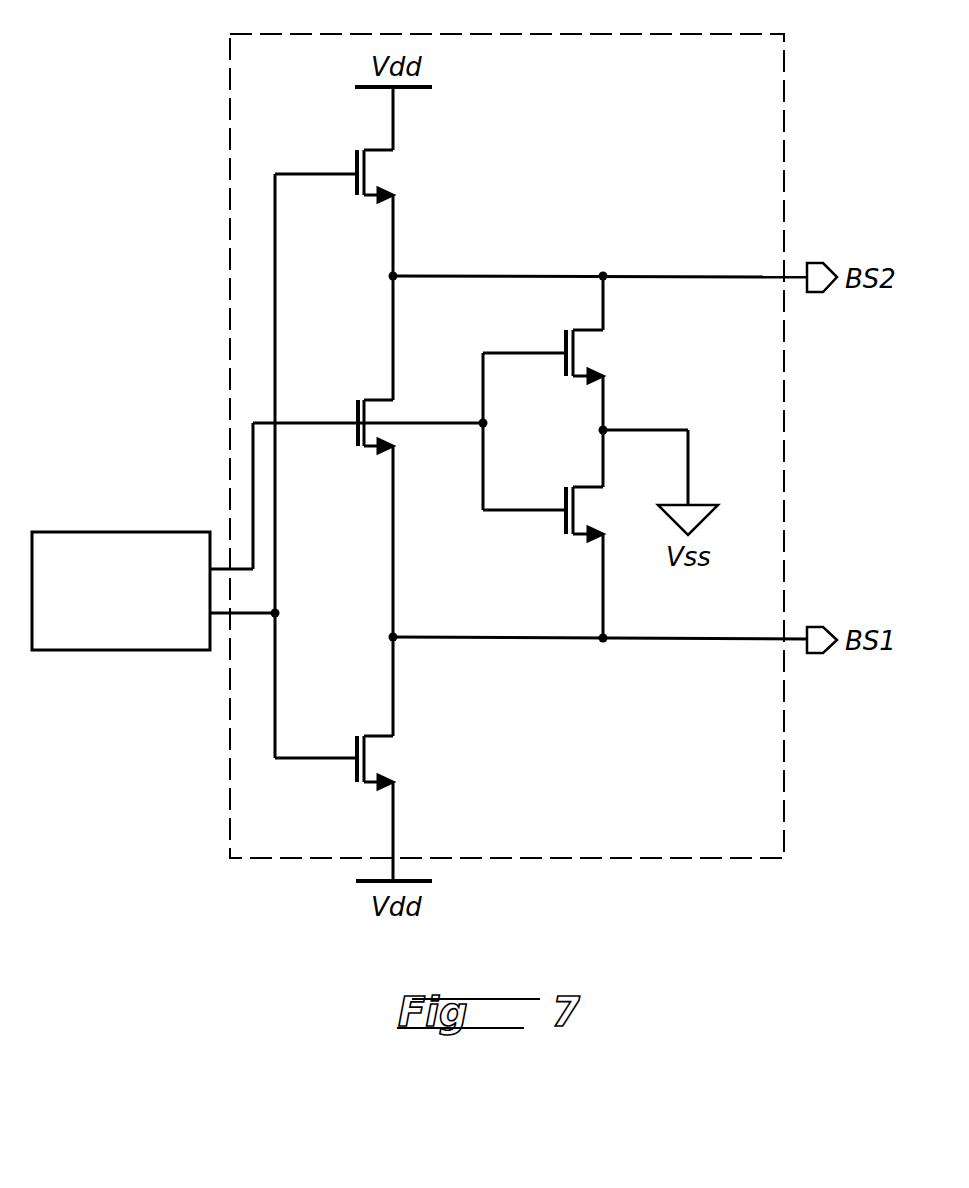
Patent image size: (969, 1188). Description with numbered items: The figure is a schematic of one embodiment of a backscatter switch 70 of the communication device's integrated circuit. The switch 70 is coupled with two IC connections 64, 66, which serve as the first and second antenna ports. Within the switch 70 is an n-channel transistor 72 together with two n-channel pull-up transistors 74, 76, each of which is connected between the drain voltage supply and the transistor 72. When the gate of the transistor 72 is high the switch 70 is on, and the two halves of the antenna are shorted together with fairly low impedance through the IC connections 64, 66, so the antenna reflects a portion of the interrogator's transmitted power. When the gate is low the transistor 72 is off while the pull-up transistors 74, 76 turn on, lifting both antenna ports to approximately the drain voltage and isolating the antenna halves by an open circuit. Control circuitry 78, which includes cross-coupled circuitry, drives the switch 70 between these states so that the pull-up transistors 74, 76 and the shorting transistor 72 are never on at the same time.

The switch 70 is at (230, 98).
The n-channel transistor 72 is at (346, 463).
The n-channel pull-up transistor 74 is at (418, 161).
The n-channel pull-up transistor 76 is at (416, 751).
The control circuitry 78 is at (98, 531).
The IC connection 66 is at (824, 271).
The IC connection 64 is at (824, 655).